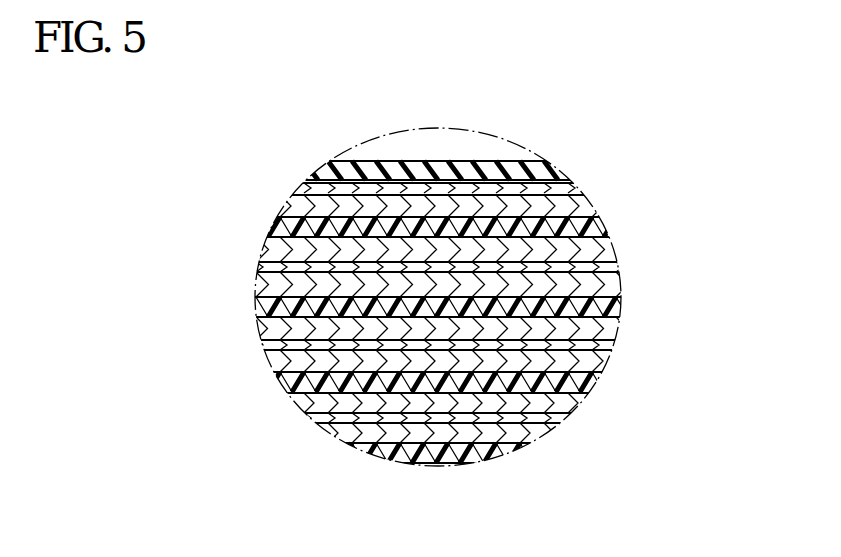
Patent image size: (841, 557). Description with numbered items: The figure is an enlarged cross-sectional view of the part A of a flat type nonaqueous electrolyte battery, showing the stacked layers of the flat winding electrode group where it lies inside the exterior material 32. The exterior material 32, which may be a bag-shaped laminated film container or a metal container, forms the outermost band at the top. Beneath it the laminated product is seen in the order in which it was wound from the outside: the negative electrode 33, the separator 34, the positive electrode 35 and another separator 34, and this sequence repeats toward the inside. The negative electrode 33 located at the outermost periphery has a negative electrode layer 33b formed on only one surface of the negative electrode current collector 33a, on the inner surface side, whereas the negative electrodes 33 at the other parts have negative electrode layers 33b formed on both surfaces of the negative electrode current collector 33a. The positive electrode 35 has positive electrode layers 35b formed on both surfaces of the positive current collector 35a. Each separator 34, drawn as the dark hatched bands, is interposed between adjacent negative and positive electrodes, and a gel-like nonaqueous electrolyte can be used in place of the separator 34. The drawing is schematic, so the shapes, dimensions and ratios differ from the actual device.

The part A is at (379, 148).
The exterior material 32 is at (548, 173).
The negative electrode 33 is at (507, 279).
The negative electrode current collector 33a is at (557, 190).
The negative electrode layer 33b is at (573, 208).
The separator 34 is at (282, 227).
The positive electrode 35 is at (503, 359).
The positive current collector 35a is at (607, 267).
The positive electrode layer 35b is at (607, 248).